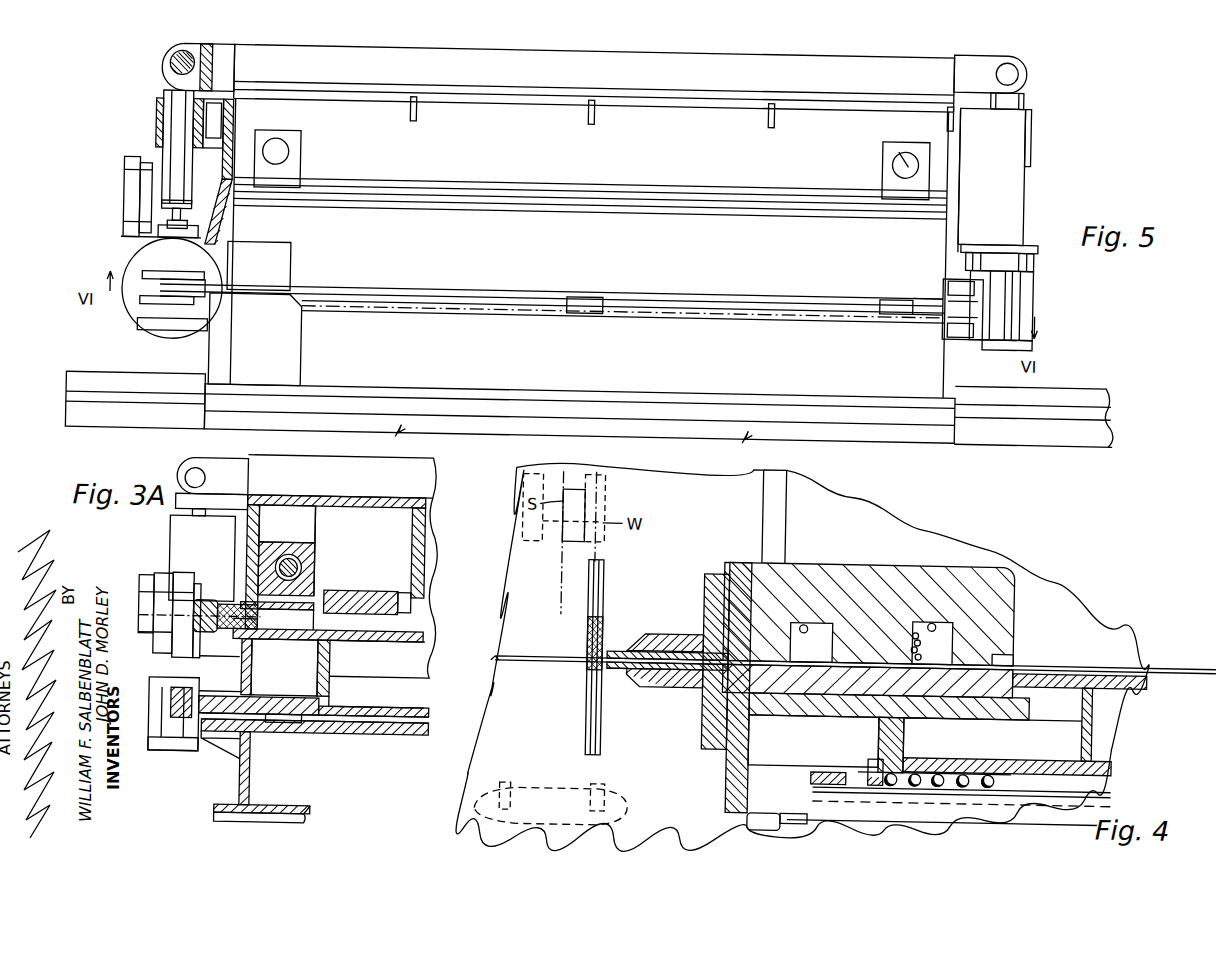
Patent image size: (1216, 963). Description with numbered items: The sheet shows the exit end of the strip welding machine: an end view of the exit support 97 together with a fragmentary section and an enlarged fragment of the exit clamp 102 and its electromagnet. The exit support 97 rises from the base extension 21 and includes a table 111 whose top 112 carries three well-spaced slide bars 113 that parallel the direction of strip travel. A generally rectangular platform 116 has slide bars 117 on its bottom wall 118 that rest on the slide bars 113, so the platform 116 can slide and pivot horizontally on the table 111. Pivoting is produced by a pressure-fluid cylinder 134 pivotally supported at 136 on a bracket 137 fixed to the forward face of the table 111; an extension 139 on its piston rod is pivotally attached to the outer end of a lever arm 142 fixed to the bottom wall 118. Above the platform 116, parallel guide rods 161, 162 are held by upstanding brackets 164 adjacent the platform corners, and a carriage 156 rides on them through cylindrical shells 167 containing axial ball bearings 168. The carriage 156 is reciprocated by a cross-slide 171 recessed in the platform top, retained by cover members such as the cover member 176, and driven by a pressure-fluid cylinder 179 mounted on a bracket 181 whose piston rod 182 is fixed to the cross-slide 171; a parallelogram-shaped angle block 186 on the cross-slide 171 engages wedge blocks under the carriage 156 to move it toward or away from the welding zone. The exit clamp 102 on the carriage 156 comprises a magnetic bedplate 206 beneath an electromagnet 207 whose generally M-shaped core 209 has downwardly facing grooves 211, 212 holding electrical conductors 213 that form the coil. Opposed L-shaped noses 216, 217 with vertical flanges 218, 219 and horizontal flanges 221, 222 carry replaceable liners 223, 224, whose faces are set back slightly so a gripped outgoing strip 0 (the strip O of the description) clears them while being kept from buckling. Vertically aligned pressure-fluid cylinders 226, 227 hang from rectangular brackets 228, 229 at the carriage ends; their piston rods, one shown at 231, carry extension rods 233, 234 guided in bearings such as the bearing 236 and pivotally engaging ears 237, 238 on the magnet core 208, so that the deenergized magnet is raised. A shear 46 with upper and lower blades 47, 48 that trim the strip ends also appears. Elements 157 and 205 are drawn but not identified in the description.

In FIG. 5, the base extension 21 is at (906, 424).
In FIG. 5, the exit support 97 is at (966, 400).
In FIG. 5, the table 111 is at (692, 356).
In FIG. 3A, the table 111 is at (243, 775).
In FIG. 5, the top 112 is at (818, 312).
In FIG. 3A, the top 112 is at (326, 732).
In FIG. 5, the slide bars 113 is at (888, 302).
In FIG. 5, the platform 116 is at (624, 282).
In FIG. 5, the slide bars 117 is at (904, 284).
In FIG. 5, the bottom wall 118 is at (800, 284).
In FIG. 3A, the bottom wall 118 is at (355, 710).
In FIG. 5, the pressure-fluid cylinder 134 is at (132, 298).
In FIG. 5, the pivot 136 is at (152, 308).
In FIG. 5, the bracket 137 is at (272, 270).
In FIG. 3A, the extension 139 is at (172, 678).
In FIG. 3A, the lever arm 142 is at (278, 702).
In FIG. 5, the carriage 156 is at (591, 175).
In FIG. 4, the carriage 156 is at (1125, 676).
In FIG. 5, the frame 157 is at (320, 105).
In FIG. 5, the guide rod 161 is at (282, 151).
In FIG. 3A, the guide rod 161 is at (300, 560).
In FIG. 4, the guide rod 161 is at (961, 808).
In FIG. 5, the guide rod 162 is at (908, 144).
In FIG. 5, the upstanding bracket 164 is at (890, 150).
In FIG. 4, the upstanding bracket 164 is at (814, 771).
In FIG. 4, the cylindrical shell 167 is at (1112, 758).
In FIG. 4, the axial bearings 168 is at (962, 768).
In FIG. 3A, the cross-slide 171 is at (358, 642).
In FIG. 3A, the cover member 176 is at (305, 600).
In FIG. 5, the pressure-fluid cylinder 179 is at (126, 162).
In FIG. 3A, the pressure-fluid cylinder 179 is at (135, 578).
In FIG. 5, the bracket 181 is at (140, 240).
In FIG. 3A, the bracket 181 is at (262, 660).
In FIG. 3A, the piston rod 182 is at (208, 598).
In FIG. 3A, the angle block 186 is at (356, 589).
In FIG. 4, the spacer 205 is at (932, 700).
In FIG. 4, the bedplate 206 is at (820, 712).
In FIG. 3A, the electromagnet 207 is at (368, 446).
In FIG. 4, the electromagnet 207 is at (1077, 574).
In FIG. 5, the magnet core 208 is at (596, 20).
In FIG. 4, the M-shaped core 209 is at (900, 548).
In FIG. 4, the groove 211 is at (802, 620).
In FIG. 4, the groove 212 is at (930, 618).
In FIG. 4, the electrical conductors 213 is at (912, 647).
In FIG. 4, the nose 216 is at (690, 604).
In FIG. 4, the nose 217 is at (696, 746).
In FIG. 4, the vertical flange 218 is at (710, 570).
In FIG. 4, the vertical flange 219 is at (712, 746).
In FIG. 4, the horizontal flange 221 is at (676, 646).
In FIG. 4, the horizontal flange 222 is at (682, 688).
In FIG. 4, the planar liner 223 is at (606, 654).
In FIG. 4, the planar liner 224 is at (605, 666).
In FIG. 5, the pressure fluid cylinder 226 is at (150, 250).
In FIG. 5, the pressure fluid cylinder 227 is at (1022, 304).
In FIG. 5, the bracket 228 is at (202, 190).
In FIG. 5, the bracket 229 is at (1025, 173).
In FIG. 5, the piston rod 231 is at (168, 218).
In FIG. 5, the extension rod 233 is at (168, 98).
In FIG. 5, the extension rod 234 is at (1022, 86).
In FIG. 5, the bearing 236 is at (152, 112).
In FIG. 5, the ear 237 is at (214, 52).
In FIG. 3A, the ear 237 is at (238, 444).
In FIG. 5, the ear 238 is at (998, 24).
In FIG. 4, the shear 46 is at (535, 466).
In FIG. 4, the upper blade 47 is at (603, 486).
In FIG. 4, the lower blade 48 is at (510, 782).
In FIG. 4, the exit clamp 102 is at (1081, 620).
In FIG. 4, the outgoing strip 0 is at (1064, 660).